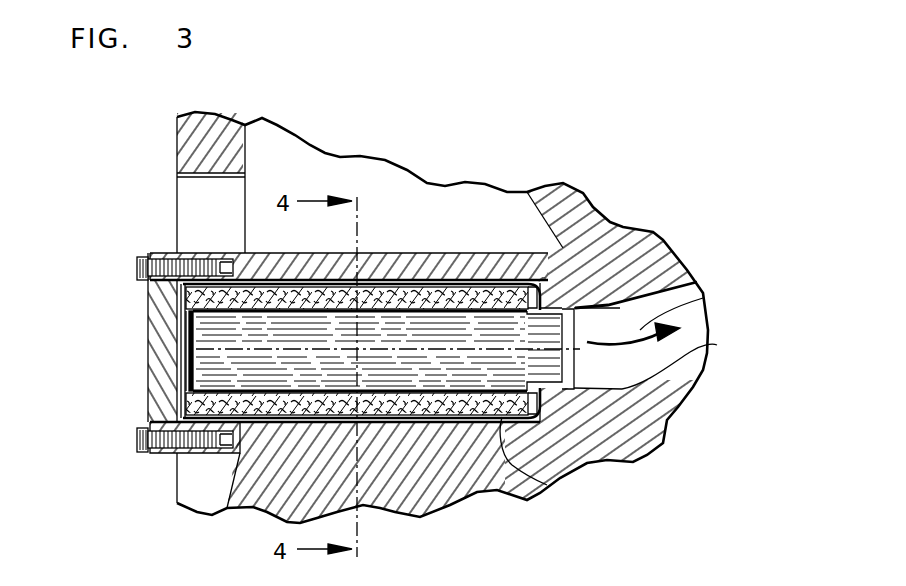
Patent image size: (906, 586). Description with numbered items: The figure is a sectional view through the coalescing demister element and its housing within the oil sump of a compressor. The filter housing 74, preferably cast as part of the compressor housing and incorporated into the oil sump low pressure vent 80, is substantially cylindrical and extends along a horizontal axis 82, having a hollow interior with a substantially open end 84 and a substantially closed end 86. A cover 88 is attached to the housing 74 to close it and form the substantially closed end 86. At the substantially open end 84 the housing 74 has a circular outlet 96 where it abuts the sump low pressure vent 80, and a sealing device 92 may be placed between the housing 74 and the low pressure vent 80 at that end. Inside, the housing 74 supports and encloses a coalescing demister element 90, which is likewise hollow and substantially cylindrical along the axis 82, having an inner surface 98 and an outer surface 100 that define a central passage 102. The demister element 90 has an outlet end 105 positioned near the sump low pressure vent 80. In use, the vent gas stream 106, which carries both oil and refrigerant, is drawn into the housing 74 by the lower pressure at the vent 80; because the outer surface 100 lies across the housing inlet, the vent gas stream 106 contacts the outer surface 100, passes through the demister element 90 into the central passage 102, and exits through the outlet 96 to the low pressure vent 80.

The filter housing 74 is at (452, 442).
The oil sump low pressure vent 80 is at (717, 345).
The axis 82 is at (228, 309).
The substantially open end 84 is at (383, 350).
The substantially closed end 86 is at (360, 379).
The cover 88 is at (147, 300).
The coalescing demister element 90 is at (407, 287).
The sealing device 92 is at (617, 241).
The outlet 96 is at (528, 340).
The inner surface 98 is at (186, 345).
The outer surface 100 is at (463, 283).
The central passage 102 is at (388, 340).
The outlet end 105 is at (547, 485).
The vent gas stream 106 is at (698, 288).